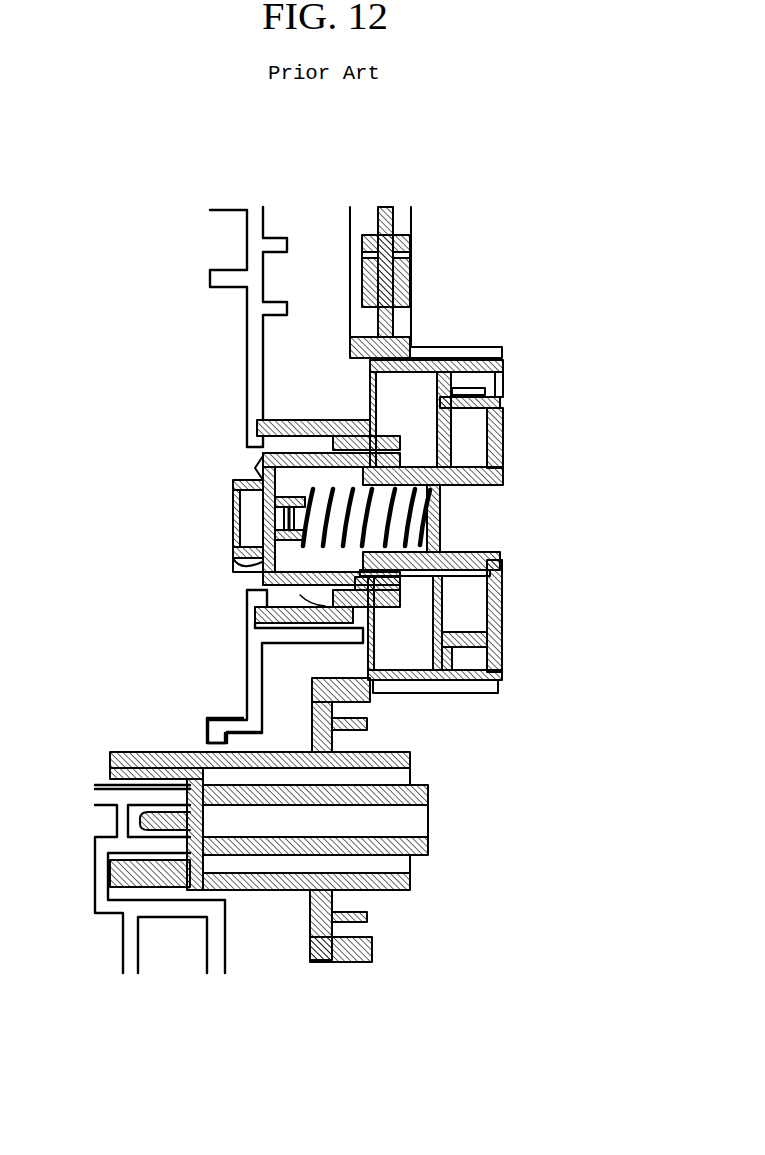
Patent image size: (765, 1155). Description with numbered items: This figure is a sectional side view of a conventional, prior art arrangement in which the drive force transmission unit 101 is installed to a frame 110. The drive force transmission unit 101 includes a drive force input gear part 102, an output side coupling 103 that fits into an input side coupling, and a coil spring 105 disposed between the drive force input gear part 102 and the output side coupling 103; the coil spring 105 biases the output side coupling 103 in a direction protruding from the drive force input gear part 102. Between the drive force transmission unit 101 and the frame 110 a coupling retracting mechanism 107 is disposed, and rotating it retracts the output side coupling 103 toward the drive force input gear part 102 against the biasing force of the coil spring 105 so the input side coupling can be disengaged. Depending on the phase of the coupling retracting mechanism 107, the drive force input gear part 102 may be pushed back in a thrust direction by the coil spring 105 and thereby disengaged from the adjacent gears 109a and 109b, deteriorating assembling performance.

The drive force transmission unit 101 is at (533, 443).
The drive force input gear part 102 is at (505, 592).
The output side coupling 103 is at (243, 570).
The coil spring 105 is at (432, 512).
The coupling retracting mechanism 107 is at (305, 420).
The gear 109a is at (415, 270).
The gear 109b is at (410, 758).
The frame 110 is at (250, 335).